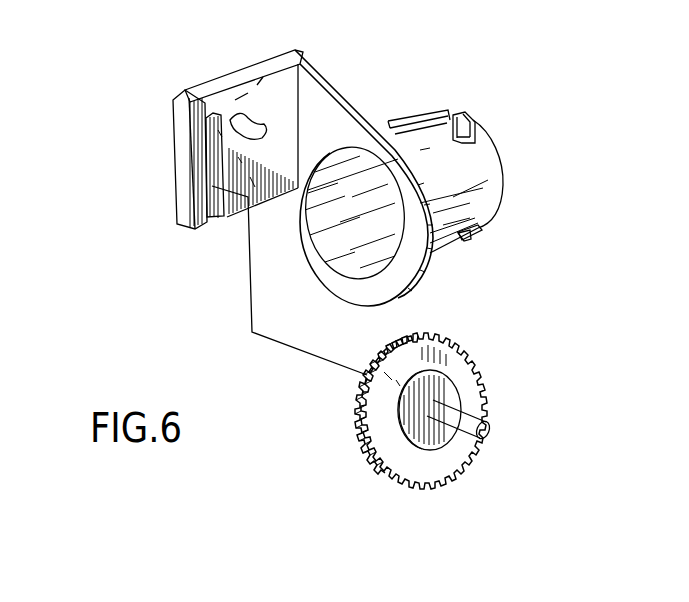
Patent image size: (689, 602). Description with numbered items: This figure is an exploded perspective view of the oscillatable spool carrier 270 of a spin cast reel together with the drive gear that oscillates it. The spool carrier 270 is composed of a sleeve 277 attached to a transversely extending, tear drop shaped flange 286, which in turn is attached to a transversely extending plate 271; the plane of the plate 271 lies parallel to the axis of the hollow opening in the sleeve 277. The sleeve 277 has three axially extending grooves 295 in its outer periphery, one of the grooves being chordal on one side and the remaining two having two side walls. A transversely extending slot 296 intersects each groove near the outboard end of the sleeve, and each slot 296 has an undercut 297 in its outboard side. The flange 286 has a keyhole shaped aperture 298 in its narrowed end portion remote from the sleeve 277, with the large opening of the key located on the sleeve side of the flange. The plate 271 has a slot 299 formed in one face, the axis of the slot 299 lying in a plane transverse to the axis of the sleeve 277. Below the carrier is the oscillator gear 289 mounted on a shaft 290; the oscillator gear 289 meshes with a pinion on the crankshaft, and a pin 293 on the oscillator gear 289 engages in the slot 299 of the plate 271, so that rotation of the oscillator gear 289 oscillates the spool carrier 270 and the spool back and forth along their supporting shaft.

The spool carrier 270 is at (357, 100).
The plate 271 is at (202, 105).
The sleeve 277 is at (483, 187).
The flange 286 is at (300, 236).
The oscillator gear 289 is at (462, 362).
The shaft 290 is at (487, 401).
The pin 293 is at (357, 413).
The grooves 295 is at (422, 117).
The slot 296 is at (457, 120).
The undercut 297 is at (467, 128).
The keyhole shaped aperture 298 is at (262, 116).
The slot 299 is at (218, 208).